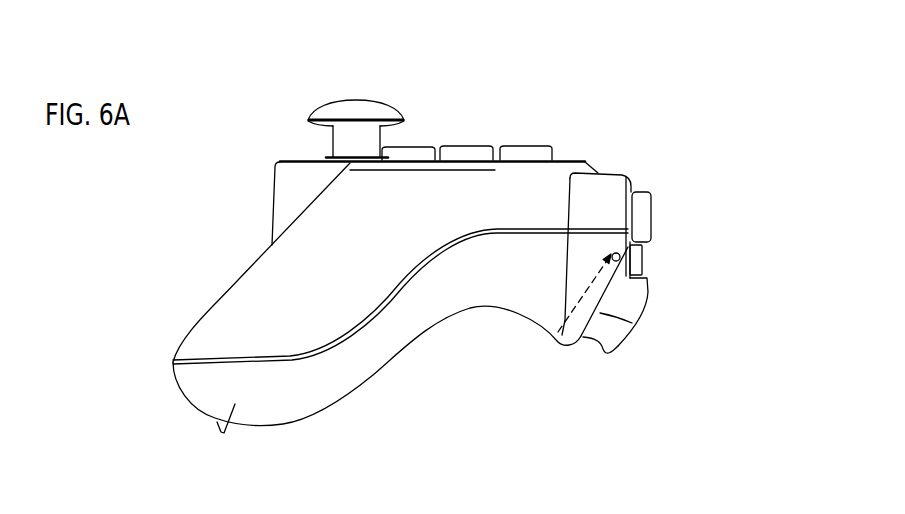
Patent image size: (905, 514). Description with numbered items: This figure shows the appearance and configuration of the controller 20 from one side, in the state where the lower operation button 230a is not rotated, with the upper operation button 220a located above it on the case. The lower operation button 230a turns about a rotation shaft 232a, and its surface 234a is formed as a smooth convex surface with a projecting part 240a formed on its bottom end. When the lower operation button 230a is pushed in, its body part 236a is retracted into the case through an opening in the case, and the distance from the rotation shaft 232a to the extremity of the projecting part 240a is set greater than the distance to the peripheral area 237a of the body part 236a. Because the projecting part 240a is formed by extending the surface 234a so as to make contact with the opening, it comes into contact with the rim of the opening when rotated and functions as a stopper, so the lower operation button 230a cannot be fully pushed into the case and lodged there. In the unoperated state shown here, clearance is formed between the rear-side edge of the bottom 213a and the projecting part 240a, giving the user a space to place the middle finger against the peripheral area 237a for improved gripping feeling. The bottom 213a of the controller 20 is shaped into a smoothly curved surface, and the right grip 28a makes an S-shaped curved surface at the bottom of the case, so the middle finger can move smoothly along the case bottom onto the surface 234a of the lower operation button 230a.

The controller 20 is at (476, 298).
The right grip 28a is at (217, 422).
The bottom 213a is at (373, 374).
The upper operation button 220a is at (663, 210).
The rotation shaft 232a is at (650, 242).
The surface 234a is at (648, 282).
The lower operation button 230a is at (665, 314).
The body part 236a is at (632, 323).
The peripheral area 237a is at (583, 343).
The projecting part 240a is at (612, 353).